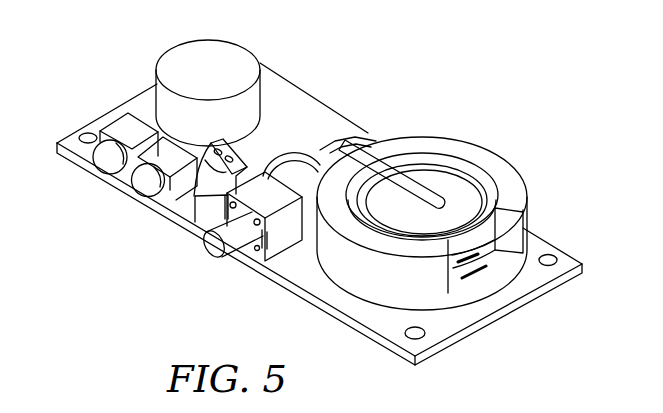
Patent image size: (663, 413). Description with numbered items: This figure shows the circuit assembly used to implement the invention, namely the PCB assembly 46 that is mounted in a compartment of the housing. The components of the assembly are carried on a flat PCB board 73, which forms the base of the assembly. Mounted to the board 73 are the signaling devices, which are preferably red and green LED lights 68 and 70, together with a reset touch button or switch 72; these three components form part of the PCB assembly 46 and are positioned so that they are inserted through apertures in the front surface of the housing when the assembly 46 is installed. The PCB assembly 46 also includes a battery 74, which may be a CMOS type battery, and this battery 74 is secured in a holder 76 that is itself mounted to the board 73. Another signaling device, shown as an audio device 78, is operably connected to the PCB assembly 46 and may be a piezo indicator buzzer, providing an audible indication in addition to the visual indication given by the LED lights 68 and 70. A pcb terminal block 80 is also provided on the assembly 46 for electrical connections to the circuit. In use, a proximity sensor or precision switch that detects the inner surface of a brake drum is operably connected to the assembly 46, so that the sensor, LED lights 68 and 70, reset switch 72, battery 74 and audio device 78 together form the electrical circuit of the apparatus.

The PCB assembly 46 is at (496, 344).
The LED light 68 is at (102, 171).
The LED light 70 is at (140, 193).
The reset touch button or switch 72 is at (228, 257).
The PCB board 73 is at (522, 282).
The battery 74 is at (440, 178).
The holder 76 is at (497, 163).
The audio device 78 is at (155, 100).
The pcb terminal block 80 is at (208, 211).